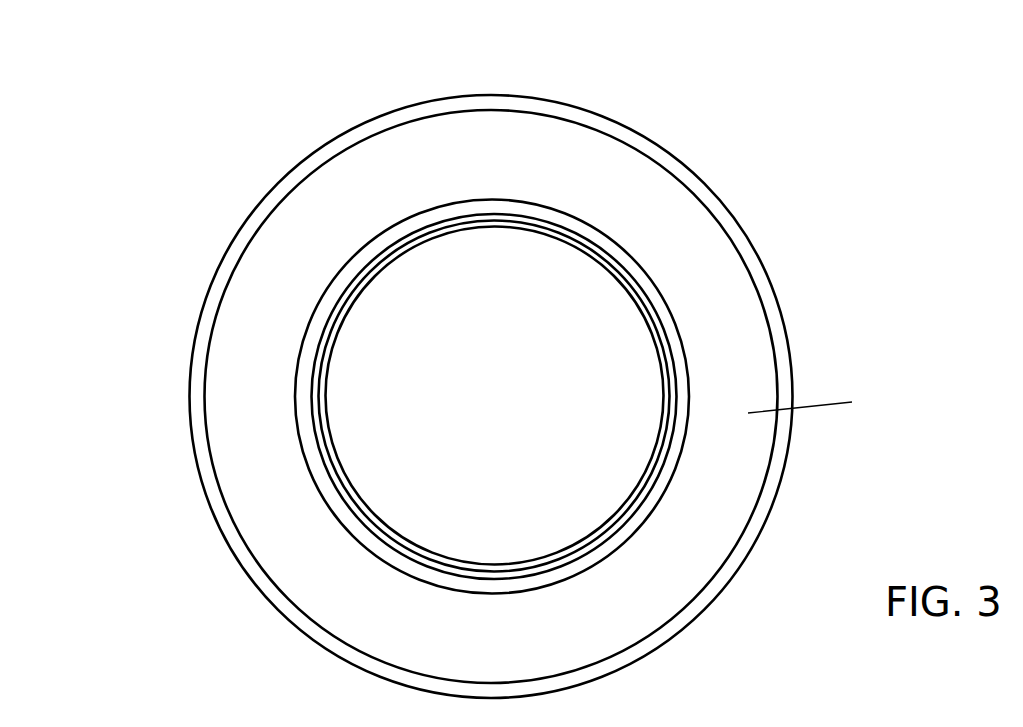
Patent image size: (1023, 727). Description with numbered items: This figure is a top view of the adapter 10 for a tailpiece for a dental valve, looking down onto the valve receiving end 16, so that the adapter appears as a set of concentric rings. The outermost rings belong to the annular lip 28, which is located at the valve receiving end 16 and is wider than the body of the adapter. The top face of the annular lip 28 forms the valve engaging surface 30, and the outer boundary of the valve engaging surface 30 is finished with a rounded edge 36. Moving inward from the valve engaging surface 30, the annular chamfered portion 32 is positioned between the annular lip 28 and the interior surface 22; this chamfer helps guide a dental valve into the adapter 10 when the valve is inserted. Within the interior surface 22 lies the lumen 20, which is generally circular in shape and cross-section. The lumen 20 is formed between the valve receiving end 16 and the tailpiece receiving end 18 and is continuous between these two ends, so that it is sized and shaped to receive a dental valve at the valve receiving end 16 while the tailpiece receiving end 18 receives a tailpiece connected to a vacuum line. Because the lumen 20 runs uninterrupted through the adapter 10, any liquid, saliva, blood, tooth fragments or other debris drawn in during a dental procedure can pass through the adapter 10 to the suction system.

The adapter 10 is at (541, 396).
The valve receiving end 16 is at (818, 275).
The tailpiece receiving end 18 is at (578, 530).
The lumen 20 is at (416, 491).
The interior surface 22 is at (502, 240).
The annular lip 28 is at (541, 396).
The valve engaging surface 30 is at (818, 404).
The annular chamfered portion 32 is at (402, 232).
The rounded edge 36 is at (765, 527).